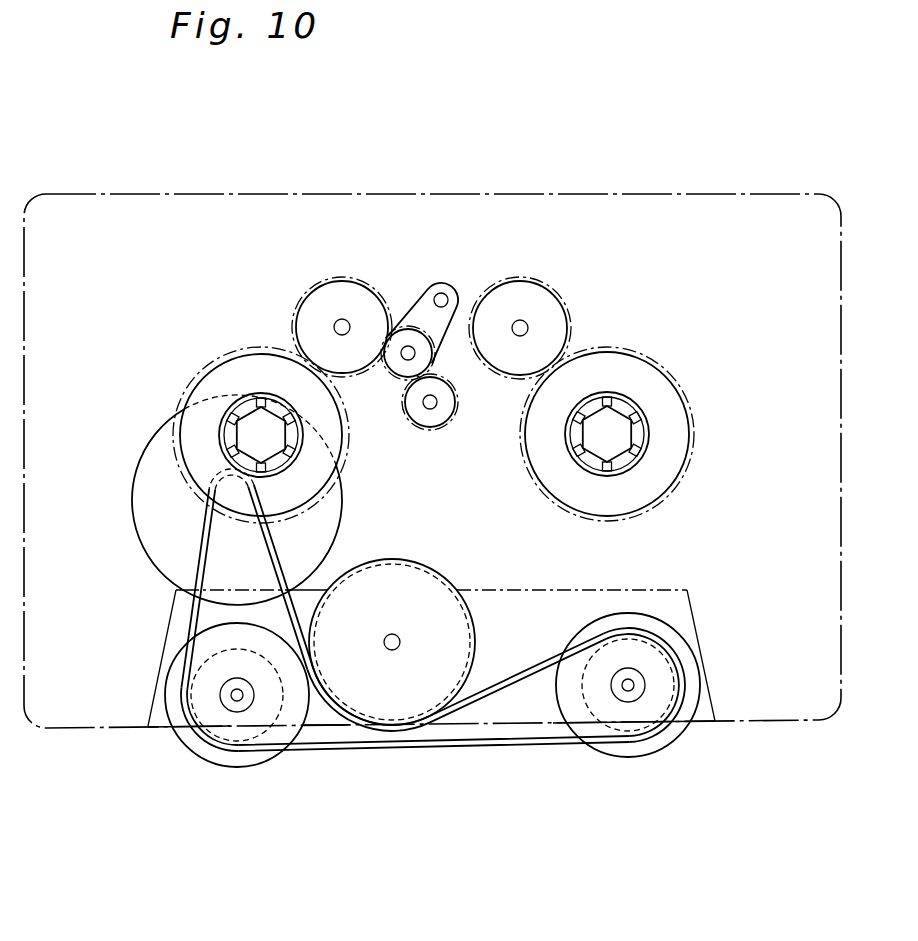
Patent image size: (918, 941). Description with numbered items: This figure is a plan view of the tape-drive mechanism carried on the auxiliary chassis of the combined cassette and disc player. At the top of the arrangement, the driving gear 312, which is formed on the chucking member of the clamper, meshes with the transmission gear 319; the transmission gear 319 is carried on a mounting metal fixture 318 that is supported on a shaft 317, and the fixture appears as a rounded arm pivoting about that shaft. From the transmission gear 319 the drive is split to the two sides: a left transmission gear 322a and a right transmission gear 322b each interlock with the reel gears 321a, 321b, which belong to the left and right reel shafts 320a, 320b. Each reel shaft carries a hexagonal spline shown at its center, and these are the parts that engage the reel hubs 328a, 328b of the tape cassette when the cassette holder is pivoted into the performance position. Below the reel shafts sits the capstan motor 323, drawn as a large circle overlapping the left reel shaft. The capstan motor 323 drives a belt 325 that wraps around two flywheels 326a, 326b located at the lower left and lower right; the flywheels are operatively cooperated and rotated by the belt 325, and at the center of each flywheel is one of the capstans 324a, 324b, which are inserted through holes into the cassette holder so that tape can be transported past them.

The driving gear 312 is at (443, 410).
The shaft 317 is at (443, 297).
The mounting metal fixture 318 is at (412, 305).
The transmission gear 319 is at (393, 365).
The reel shaft 320a is at (255, 442).
The reel shaft 320b is at (611, 425).
The reel gear 321a is at (227, 378).
The reel gear 321b is at (687, 407).
The transmission gear 322a is at (317, 304).
The transmission gear 322b is at (543, 305).
The capstan motor 323 is at (157, 530).
The capstan 324a is at (238, 700).
The capstan 324b is at (628, 688).
The belt 325 is at (427, 745).
The flywheel 326a is at (213, 753).
The flywheel 326b is at (615, 750).
The reel hub 328a is at (303, 432).
The reel hub 328b is at (640, 458).